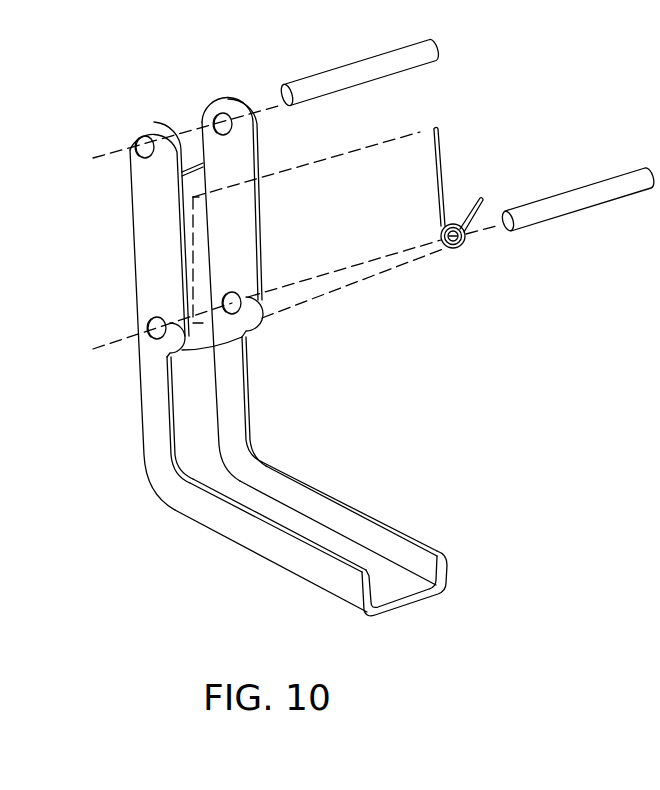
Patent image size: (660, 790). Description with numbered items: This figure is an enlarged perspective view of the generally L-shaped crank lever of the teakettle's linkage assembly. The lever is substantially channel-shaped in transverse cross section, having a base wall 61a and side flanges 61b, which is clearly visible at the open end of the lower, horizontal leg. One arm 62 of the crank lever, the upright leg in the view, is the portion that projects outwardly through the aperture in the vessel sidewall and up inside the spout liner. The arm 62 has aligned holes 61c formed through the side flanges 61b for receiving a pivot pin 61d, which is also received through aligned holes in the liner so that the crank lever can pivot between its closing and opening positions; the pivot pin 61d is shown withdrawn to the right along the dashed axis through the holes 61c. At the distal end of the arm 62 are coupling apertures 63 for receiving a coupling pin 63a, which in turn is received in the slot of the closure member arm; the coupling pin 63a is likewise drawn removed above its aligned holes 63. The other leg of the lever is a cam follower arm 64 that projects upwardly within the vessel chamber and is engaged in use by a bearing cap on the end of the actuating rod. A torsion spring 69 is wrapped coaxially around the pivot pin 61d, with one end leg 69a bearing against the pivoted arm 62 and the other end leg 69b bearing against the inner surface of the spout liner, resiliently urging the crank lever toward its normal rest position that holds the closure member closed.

The base wall 61a is at (403, 595).
The side flanges 61b is at (227, 436).
The aligned holes 61c is at (242, 337).
The pivot pin 61d is at (617, 181).
The arm 62 is at (132, 267).
The coupling apertures 63 is at (205, 118).
The coupling pin 63a is at (313, 83).
The cam follower arm 64 is at (284, 566).
The torsion spring 69 is at (462, 243).
The end leg 69a is at (440, 166).
The spring arm 69b is at (481, 200).